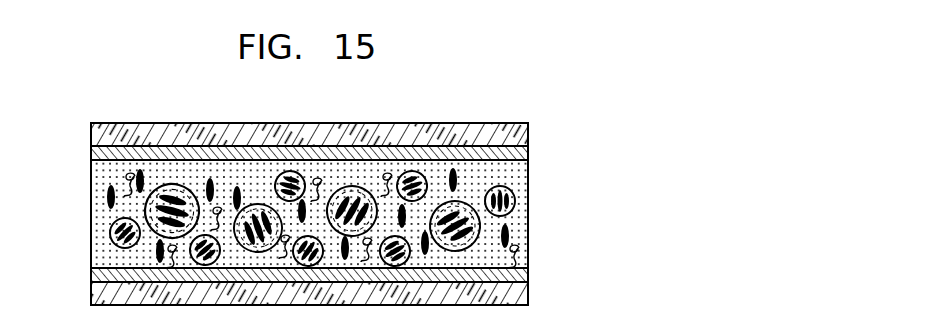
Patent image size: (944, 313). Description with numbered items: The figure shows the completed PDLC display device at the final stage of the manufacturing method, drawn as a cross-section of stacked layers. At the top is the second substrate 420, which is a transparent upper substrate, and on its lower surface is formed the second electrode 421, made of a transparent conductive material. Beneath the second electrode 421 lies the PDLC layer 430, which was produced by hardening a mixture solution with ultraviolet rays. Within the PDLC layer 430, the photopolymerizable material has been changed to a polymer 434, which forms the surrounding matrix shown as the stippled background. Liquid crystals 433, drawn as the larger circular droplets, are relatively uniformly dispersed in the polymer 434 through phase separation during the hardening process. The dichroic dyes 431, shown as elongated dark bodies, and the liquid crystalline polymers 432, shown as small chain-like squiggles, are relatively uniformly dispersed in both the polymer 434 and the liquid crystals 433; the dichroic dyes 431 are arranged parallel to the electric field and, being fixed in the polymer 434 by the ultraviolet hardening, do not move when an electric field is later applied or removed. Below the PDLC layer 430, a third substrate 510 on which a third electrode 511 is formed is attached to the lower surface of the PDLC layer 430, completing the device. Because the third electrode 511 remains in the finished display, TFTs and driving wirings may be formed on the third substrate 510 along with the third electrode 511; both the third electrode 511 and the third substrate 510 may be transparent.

The second substrate 420 is at (528, 131).
The second electrode 421 is at (528, 153).
The PDLC layer 430 is at (543, 158).
The dichroic dyes 431 is at (107, 204).
The liquid crystalline polymers 432 is at (124, 178).
The liquid crystals 433 is at (110, 235).
The polymer 434 is at (97, 253).
The third electrode 511 is at (528, 273).
The third substrate 510 is at (528, 296).